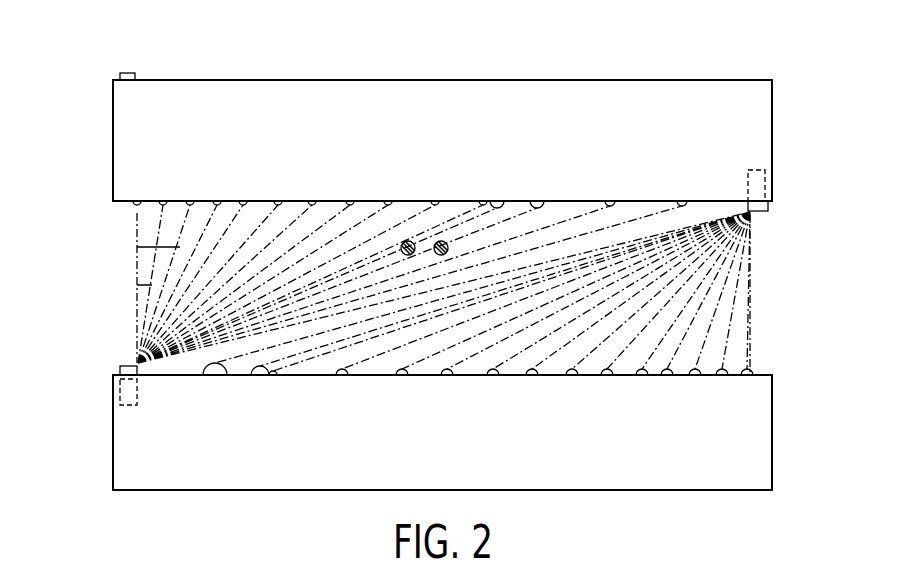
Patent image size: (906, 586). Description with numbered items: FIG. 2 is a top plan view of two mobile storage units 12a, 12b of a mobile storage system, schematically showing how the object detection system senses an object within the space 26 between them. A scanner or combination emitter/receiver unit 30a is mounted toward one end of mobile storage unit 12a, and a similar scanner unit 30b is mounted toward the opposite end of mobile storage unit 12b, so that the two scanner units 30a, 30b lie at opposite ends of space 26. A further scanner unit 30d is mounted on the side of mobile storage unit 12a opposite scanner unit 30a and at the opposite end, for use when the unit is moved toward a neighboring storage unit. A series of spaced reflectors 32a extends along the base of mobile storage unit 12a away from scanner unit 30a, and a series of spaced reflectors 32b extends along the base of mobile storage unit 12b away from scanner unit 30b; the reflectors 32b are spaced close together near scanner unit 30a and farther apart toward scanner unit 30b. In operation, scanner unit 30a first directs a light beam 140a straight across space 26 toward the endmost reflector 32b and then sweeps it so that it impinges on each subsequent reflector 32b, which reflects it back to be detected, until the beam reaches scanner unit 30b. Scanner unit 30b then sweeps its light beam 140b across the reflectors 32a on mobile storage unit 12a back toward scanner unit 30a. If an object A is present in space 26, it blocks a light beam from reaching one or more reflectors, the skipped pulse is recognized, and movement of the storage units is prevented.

The mobile storage unit 12a is at (84, 152).
The mobile storage unit 12b is at (94, 443).
The scanner unit 30a is at (782, 210).
The scanner unit 30b is at (108, 370).
The scanner unit 30d is at (127, 72).
The reflectors 32a is at (163, 207).
The reflectors 32b is at (221, 378).
The space 26 is at (770, 273).
The light beam 140a is at (750, 283).
The light beam 140b is at (137, 247).
The object A is at (441, 241).